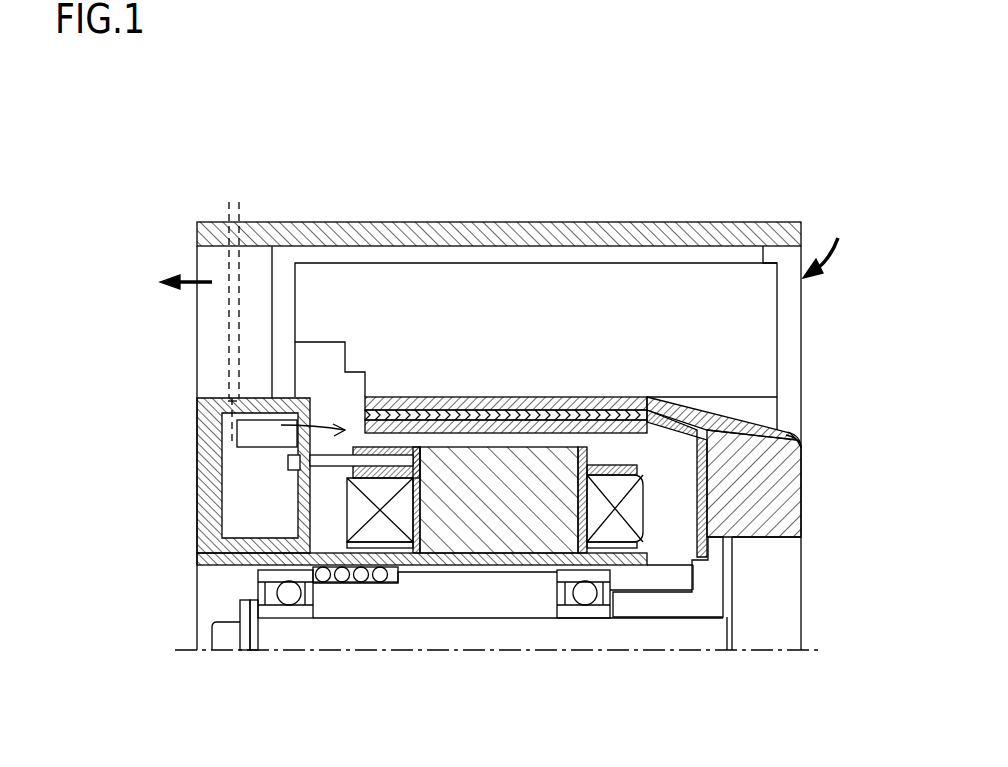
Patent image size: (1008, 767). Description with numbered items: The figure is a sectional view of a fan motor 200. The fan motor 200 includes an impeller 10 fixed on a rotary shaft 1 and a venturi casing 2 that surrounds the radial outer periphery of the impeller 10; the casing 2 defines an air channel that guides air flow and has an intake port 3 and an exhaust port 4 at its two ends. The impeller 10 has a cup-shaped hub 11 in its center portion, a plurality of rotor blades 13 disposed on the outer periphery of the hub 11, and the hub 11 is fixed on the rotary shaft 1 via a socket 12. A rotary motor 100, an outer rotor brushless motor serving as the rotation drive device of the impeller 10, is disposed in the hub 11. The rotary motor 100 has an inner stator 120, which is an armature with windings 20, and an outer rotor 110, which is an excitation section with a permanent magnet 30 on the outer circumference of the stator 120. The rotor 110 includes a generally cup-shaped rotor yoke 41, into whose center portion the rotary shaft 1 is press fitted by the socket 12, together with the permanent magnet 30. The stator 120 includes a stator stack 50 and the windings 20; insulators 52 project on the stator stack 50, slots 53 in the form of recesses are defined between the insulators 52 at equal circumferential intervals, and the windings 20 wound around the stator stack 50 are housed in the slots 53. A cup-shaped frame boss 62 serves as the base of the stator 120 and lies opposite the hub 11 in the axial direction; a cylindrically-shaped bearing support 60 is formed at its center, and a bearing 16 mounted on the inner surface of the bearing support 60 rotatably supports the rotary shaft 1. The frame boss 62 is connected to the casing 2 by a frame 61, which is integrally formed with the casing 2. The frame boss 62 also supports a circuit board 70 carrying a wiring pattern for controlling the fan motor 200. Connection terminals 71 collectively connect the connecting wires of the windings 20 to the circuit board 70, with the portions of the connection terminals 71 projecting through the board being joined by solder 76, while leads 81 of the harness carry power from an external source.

The fan motor 200 is at (202, 77).
The rotary shaft 1 is at (702, 640).
The venturi casing 2 is at (263, 222).
The intake port 3 is at (803, 297).
The exhaust port 4 is at (197, 313).
The impeller 10 is at (767, 458).
The hub 11 is at (783, 490).
The socket 12 is at (723, 573).
The rotor blades 13 is at (518, 278).
The bearing 16 is at (585, 594).
The windings 20 is at (612, 527).
The permanent magnet 30 is at (560, 400).
The rotor yoke 41 is at (680, 402).
The stator stack 50 is at (497, 455).
The insulators 52 is at (607, 463).
The slots 53 is at (800, 438).
The bearing support 60 is at (260, 605).
The frame 61 is at (207, 268).
The frame boss 62 is at (198, 463).
The circuit board 70 is at (263, 565).
The connection terminals 71 is at (338, 468).
The solder 76 is at (298, 457).
The leads 81 is at (223, 267).
The rotary motor 100 is at (263, 398).
The outer rotor 110 is at (707, 453).
The inner stator 120 is at (437, 445).